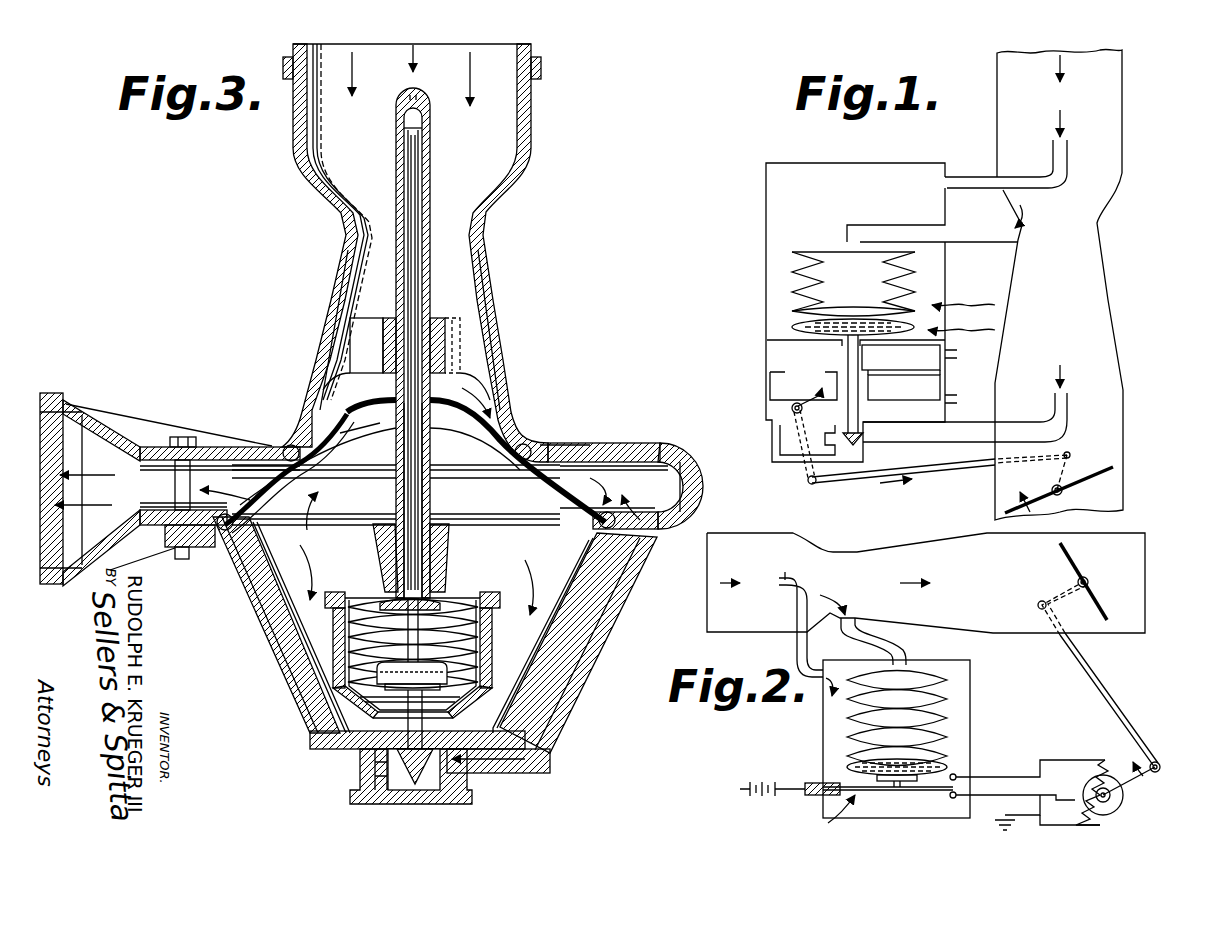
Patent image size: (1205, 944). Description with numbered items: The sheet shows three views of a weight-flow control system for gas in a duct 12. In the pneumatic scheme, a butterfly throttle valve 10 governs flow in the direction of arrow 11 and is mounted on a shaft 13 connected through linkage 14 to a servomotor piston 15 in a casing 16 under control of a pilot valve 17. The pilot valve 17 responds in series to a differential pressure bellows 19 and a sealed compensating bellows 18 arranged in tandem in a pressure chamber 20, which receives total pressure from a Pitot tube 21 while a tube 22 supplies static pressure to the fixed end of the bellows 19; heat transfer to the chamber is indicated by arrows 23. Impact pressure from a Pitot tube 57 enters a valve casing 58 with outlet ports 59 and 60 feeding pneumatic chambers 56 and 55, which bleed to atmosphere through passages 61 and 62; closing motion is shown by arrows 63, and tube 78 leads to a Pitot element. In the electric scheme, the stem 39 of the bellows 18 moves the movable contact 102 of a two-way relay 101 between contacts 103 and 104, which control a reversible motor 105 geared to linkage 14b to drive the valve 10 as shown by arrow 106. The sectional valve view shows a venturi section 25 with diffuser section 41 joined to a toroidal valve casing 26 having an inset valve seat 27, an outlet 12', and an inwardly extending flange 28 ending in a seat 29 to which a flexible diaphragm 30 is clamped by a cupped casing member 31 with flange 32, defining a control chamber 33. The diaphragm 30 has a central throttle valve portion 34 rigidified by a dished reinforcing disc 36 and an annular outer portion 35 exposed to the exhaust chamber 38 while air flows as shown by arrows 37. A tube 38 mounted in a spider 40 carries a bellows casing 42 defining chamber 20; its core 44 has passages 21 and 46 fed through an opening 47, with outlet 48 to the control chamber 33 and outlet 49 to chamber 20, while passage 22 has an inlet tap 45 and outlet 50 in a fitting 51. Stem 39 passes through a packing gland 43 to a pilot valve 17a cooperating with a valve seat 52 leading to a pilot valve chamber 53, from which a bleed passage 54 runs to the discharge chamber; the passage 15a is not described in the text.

In FIG. 1, the throttle valve 10 is at (1098, 468).
In FIG. 2, the throttle valve 10 is at (1095, 553).
In FIG. 1, the arrow 11 is at (1075, 365).
In FIG. 3, the duct 12 is at (434, 253).
In FIG. 1, the duct 12 is at (1082, 284).
In FIG. 3, the outlet 12' is at (170, 474).
In FIG. 1, the shaft 13 is at (1063, 492).
In FIG. 1, the linkage 14 is at (966, 470).
In FIG. 2, the linkage 14b is at (1110, 690).
In FIG. 1, the servomotor piston 15 is at (825, 372).
In FIG. 3, the passage 15a is at (575, 499).
In FIG. 1, the casing 16 is at (766, 362).
In FIG. 1, the pilot valve 17 is at (865, 440).
In FIG. 3, the pilot valve 17a is at (395, 780).
In FIG. 3, the sealed bellows 18 is at (450, 672).
In FIG. 1, the sealed bellows 18 is at (800, 322).
In FIG. 2, the sealed bellows 18 is at (944, 752).
In FIG. 3, the differential pressure responsive bellows 19 is at (460, 602).
In FIG. 1, the differential pressure responsive bellows 19 is at (820, 250).
In FIG. 2, the differential pressure responsive bellows 19 is at (950, 698).
In FIG. 3, the pressure chamber 20 is at (336, 616).
In FIG. 1, the pressure chamber 20 is at (780, 324).
In FIG. 3, the Pitot tube 21 is at (396, 172).
In FIG. 1, the Pitot tube 21 is at (1072, 155).
In FIG. 2, the Pitot tube 21 is at (785, 576).
In FIG. 3, the static pressure tube 22 is at (406, 280).
In FIG. 1, the static pressure tube 22 is at (987, 240).
In FIG. 1, the arrows 23 is at (985, 302).
In FIG. 3, the venturi section 25 is at (492, 237).
In FIG. 3, the toroidal valve casing 26 is at (618, 442).
In FIG. 3, the valve seat 27 is at (522, 448).
In FIG. 3, the flange 28 is at (700, 500).
In FIG. 3, the seat 29 is at (598, 540).
In FIG. 3, the flexible diaphragm 30 is at (295, 521).
In FIG. 3, the cupped casing member 31 is at (322, 690).
In FIG. 3, the flange 32 is at (198, 548).
In FIG. 3, the control chamber 33 is at (346, 547).
In FIG. 3, the throttle valve portion 34 is at (500, 452).
In FIG. 3, the annular outer diaphragm portion 35 is at (592, 508).
In FIG. 3, the dished reinforcing disc 36 is at (374, 430).
In FIG. 3, the arrows 37 is at (421, 231).
In FIG. 3, the tube 38 is at (396, 497).
In FIG. 3, the stem 39 is at (352, 736).
In FIG. 1, the stem 39 is at (820, 341).
In FIG. 2, the stem 39 is at (897, 792).
In FIG. 3, the spider 40 is at (446, 347).
In FIG. 3, the diffuser section 41 is at (326, 328).
In FIG. 3, the bellows casing 42 is at (340, 650).
In FIG. 3, the packing gland 43 is at (372, 714).
In FIG. 3, the core 44 is at (430, 500).
In FIG. 3, the inlet tap 45 is at (400, 233).
In FIG. 3, the passage 46 is at (419, 174).
In FIG. 3, the opening 47 is at (414, 96).
In FIG. 3, the outlet 48 is at (446, 456).
In FIG. 3, the outlet 49 is at (425, 562).
In FIG. 3, the outlet 50 is at (384, 570).
In FIG. 3, the fitting 51 is at (386, 588).
In FIG. 3, the valve seat 52 is at (376, 760).
In FIG. 3, the pilot valve chamber 53 is at (432, 804).
In FIG. 3, the bleed passage 54 is at (552, 707).
In FIG. 1, the pneumatic chamber 55 is at (915, 397).
In FIG. 1, the pneumatic chamber 56 is at (915, 369).
In FIG. 1, the Pitot tube 57 is at (1067, 418).
In FIG. 1, the valve casing 58 is at (835, 436).
In FIG. 1, the outlet port 59 is at (865, 407).
In FIG. 1, the outlet port 60 is at (783, 458).
In FIG. 1, the bleed passage 61 is at (966, 401).
In FIG. 1, the bleed passage 62 is at (970, 363).
In FIG. 1, the arrows 63 is at (903, 443).
In FIG. 1, the tube 78 is at (939, 455).
In FIG. 2, the two way relay 101 is at (828, 823).
In FIG. 2, the movable contact 102 is at (922, 792).
In FIG. 2, the contact 103 is at (962, 777).
In FIG. 2, the contact 104 is at (956, 798).
In FIG. 2, the reversible motor 105 is at (1120, 808).
In FIG. 2, the arrow 106 is at (1140, 785).